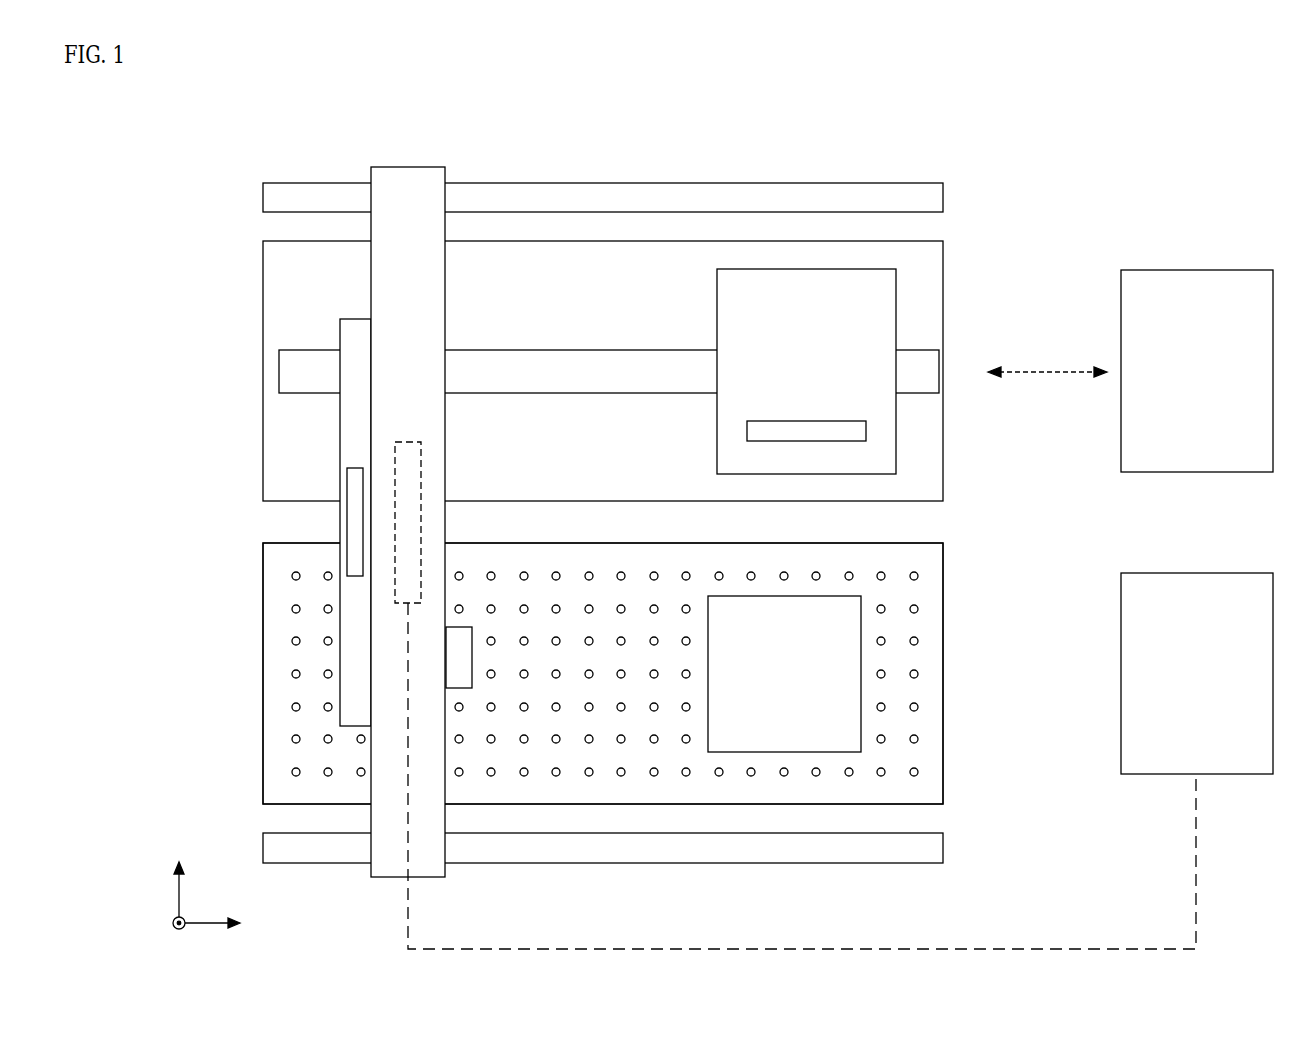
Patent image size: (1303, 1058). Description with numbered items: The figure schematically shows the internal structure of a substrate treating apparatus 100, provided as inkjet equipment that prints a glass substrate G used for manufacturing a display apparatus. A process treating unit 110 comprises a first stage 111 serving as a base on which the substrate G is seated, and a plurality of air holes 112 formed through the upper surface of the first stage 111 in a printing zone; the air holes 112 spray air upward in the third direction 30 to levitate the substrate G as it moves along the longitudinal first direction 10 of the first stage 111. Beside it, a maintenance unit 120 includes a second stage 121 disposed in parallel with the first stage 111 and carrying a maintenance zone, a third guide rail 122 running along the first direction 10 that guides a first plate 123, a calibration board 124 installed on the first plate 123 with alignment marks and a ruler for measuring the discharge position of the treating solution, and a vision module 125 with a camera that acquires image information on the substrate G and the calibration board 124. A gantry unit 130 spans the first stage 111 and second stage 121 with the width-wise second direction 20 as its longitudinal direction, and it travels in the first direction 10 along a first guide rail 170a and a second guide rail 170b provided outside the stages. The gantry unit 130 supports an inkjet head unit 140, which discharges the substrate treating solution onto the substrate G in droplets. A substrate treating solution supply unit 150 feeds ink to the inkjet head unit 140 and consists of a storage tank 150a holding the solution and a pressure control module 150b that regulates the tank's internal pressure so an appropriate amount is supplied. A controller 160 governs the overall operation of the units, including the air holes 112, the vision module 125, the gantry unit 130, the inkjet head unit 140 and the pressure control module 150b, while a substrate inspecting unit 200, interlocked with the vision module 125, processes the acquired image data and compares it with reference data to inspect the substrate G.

The substrate treating apparatus 100 is at (1114, 145).
The process treating unit 110 is at (244, 596).
The first stage 111 is at (275, 650).
The air hole 112 is at (292, 707).
The maintenance unit 120 is at (244, 268).
The second stage 121 is at (275, 445).
The third guide rail 122 is at (293, 372).
The first plate 123 is at (882, 306).
The calibration board 124 is at (858, 428).
The vision module 125 is at (406, 442).
The gantry unit 130 is at (393, 848).
The inkjet head unit 140 is at (462, 688).
The substrate treating solution supply unit 150 is at (253, 514).
The storage tank 150a is at (347, 452).
The pressure control module 150b is at (353, 519).
The controller 160 is at (1193, 270).
The first guide rail 170a is at (860, 198).
The second guide rail 170b is at (860, 863).
The substrate inspecting unit 200 is at (1193, 573).
The substrate G is at (838, 686).
The first direction 10 is at (226, 924).
The second direction 20 is at (180, 876).
The third direction 30 is at (180, 938).